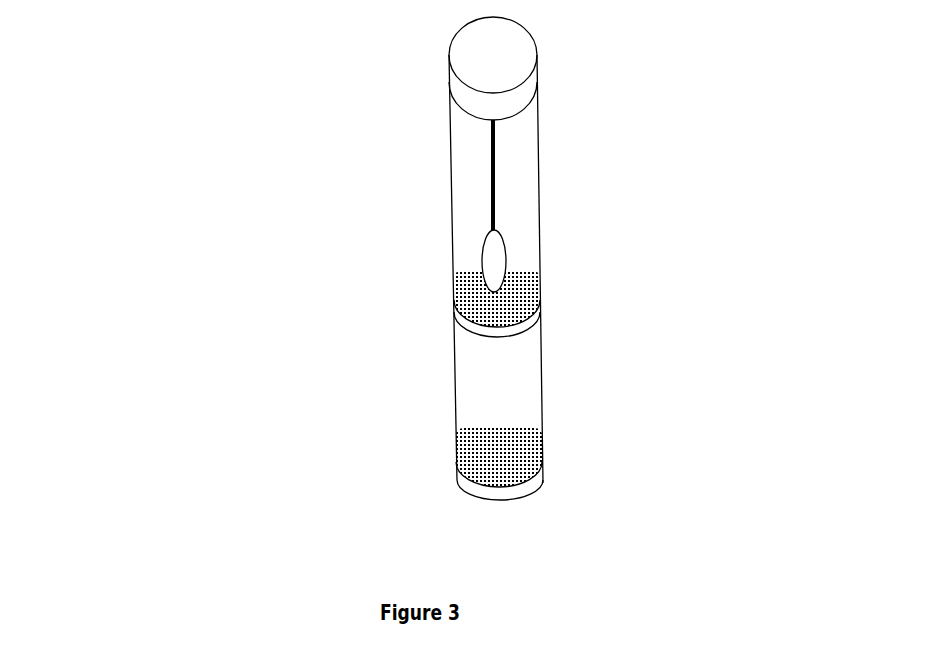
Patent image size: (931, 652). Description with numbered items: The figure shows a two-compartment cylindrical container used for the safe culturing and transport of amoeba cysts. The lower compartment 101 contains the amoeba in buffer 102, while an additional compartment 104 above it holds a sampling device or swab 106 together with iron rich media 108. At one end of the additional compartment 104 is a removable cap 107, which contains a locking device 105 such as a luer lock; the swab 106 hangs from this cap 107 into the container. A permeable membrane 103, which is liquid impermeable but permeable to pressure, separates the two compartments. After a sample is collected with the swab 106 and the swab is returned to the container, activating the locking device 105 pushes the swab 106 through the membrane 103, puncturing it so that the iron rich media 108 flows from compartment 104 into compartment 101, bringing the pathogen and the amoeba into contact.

The compartment 101 is at (558, 498).
The amoeba in buffer 102 is at (568, 387).
The permeable membrane 103 is at (540, 325).
The additional compartment 104 is at (527, 272).
The locking device 105 is at (638, 68).
The swab 106 is at (639, 176).
The removable cap 107 is at (445, 110).
The iron rich media 108 is at (470, 290).